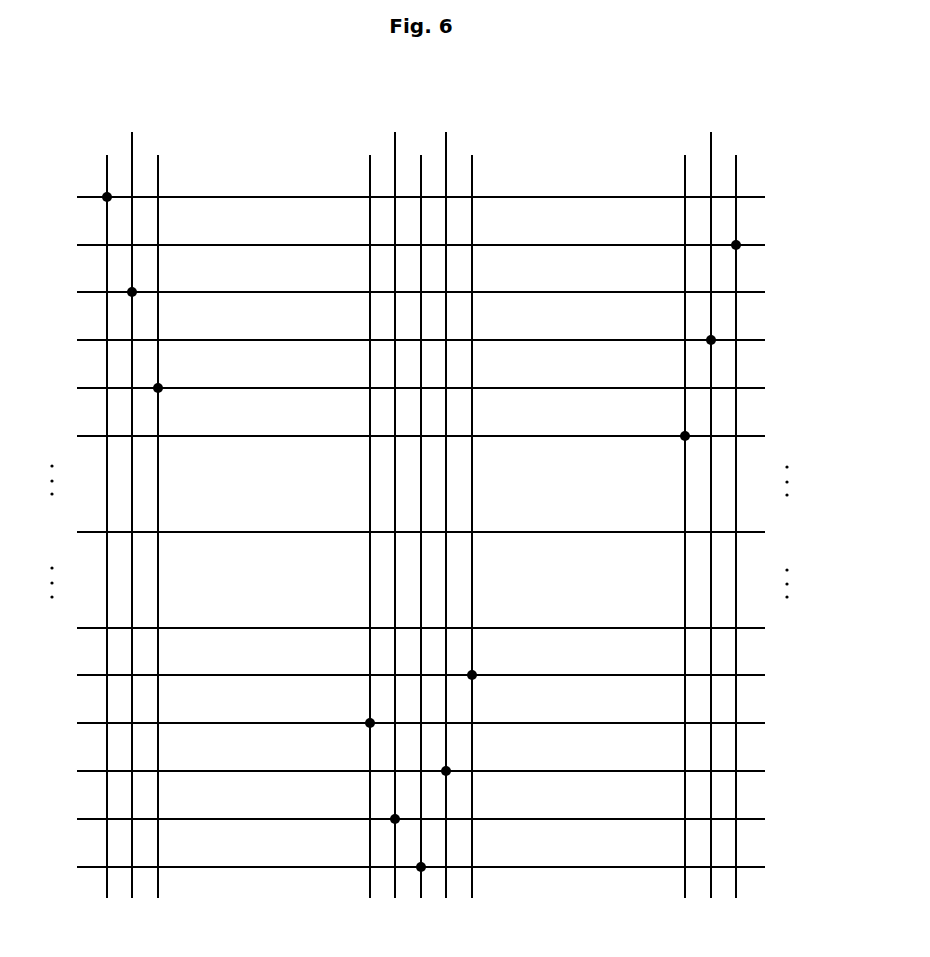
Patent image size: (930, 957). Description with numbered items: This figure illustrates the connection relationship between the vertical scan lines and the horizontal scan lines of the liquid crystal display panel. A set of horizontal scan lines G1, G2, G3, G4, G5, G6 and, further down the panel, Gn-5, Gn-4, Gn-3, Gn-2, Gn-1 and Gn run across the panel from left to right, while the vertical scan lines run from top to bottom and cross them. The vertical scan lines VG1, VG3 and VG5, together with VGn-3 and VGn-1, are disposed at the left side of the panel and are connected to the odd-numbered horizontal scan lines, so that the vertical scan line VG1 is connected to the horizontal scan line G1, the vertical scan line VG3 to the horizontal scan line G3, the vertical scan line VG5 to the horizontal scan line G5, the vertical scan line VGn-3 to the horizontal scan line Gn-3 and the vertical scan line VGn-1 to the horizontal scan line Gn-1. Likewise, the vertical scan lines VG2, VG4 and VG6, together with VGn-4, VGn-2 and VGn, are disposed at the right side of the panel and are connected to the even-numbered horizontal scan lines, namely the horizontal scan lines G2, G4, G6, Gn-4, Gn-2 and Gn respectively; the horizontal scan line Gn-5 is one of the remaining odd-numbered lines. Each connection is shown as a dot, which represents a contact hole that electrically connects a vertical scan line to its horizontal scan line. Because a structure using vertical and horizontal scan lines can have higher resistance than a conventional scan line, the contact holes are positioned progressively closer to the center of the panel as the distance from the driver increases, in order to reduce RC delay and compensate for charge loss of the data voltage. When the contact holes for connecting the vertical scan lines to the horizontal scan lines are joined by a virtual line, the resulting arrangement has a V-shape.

The horizontal scan line G1 is at (404, 197).
The horizontal scan line G2 is at (438, 245).
The horizontal scan line G3 is at (404, 292).
The horizontal scan line G4 is at (438, 340).
The horizontal scan line G5 is at (404, 388).
The horizontal scan line G6 is at (438, 436).
The horizontal scan line Gn-5 is at (397, 628).
The horizontal scan line Gn-4 is at (441, 675).
The horizontal scan line Gn-3 is at (397, 723).
The horizontal scan line Gn-2 is at (441, 771).
The horizontal scan line Gn-1 is at (397, 819).
The horizontal scan line Gn is at (438, 867).
The vertical scan line VG1 is at (107, 516).
The vertical scan line VG2 is at (736, 516).
The vertical scan line VG3 is at (132, 504).
The vertical scan line VG4 is at (711, 504).
The vertical scan line VG5 is at (158, 516).
The vertical scan line VG6 is at (685, 516).
The vertical scan line VGn-4 is at (477, 516).
The vertical scan line VGn-3 is at (363, 516).
The vertical scan line VGn-2 is at (449, 504).
The vertical scan line VGn-1 is at (391, 504).
The vertical scan line VGn is at (420, 516).